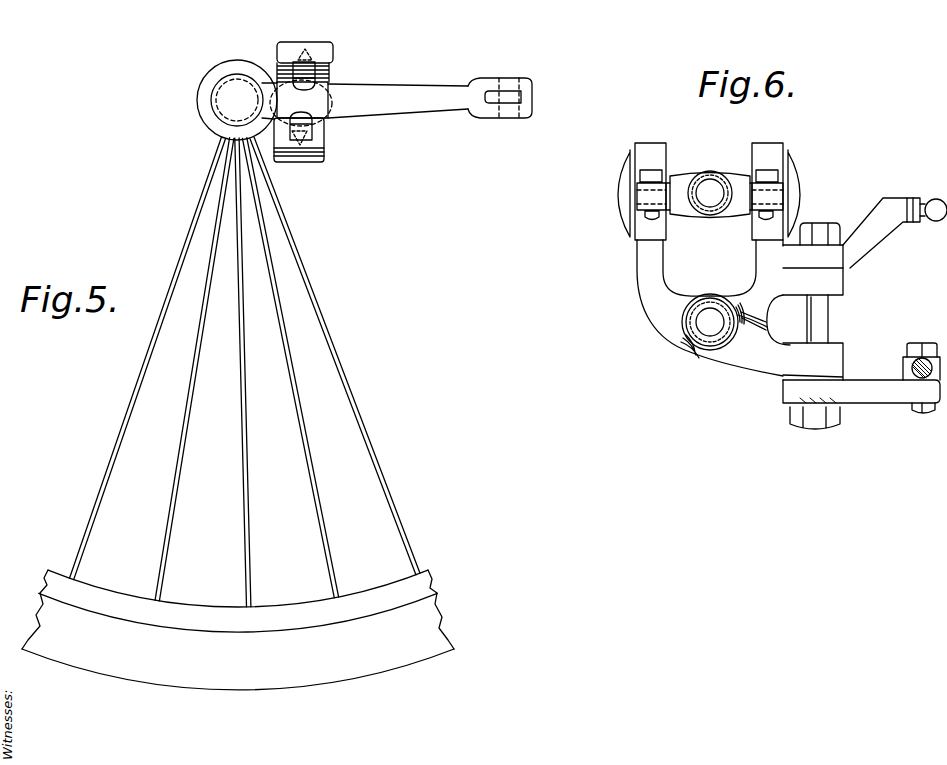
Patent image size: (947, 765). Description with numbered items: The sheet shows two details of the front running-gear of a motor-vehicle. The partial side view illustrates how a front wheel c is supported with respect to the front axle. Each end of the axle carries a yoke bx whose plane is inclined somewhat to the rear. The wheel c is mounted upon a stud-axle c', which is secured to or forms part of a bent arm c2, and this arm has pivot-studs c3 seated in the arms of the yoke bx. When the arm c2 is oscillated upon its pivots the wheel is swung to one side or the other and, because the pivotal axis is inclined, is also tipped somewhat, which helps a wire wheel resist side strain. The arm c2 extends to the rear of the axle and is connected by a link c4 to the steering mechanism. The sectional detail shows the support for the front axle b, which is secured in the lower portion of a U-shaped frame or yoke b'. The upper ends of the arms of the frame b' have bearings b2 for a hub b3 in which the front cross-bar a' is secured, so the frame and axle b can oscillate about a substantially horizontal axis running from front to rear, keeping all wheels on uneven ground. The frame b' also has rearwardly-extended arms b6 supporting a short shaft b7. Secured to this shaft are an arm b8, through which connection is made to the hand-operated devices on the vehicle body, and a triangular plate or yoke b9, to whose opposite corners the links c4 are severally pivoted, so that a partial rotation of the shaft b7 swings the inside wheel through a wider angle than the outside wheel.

In FIG. 5, the stud-axle c' is at (225, 109).
In FIG. 5, the front wheel c is at (238, 413).
In FIG. 5, the yoke bx is at (281, 68).
In FIG. 5, the pivot-studs c3 is at (313, 62).
In FIG. 5, the bent arm c2 is at (398, 101).
In FIG. 5, the links c4 is at (533, 97).
In FIG. 6, the bearings b2 is at (637, 157).
In FIG. 6, the hub b3 is at (737, 212).
In FIG. 6, the front cross-bar a' is at (711, 176).
In FIG. 6, the U-shaped frame or yoke b' is at (712, 308).
In FIG. 6, the front axle b is at (724, 344).
In FIG. 6, the arm b8 is at (880, 230).
In FIG. 6, the rearwardly-extended arms b6 is at (840, 280).
In FIG. 6, the short shaft b7 is at (826, 313).
In FIG. 6, the triangular plate or yoke b9 is at (883, 393).